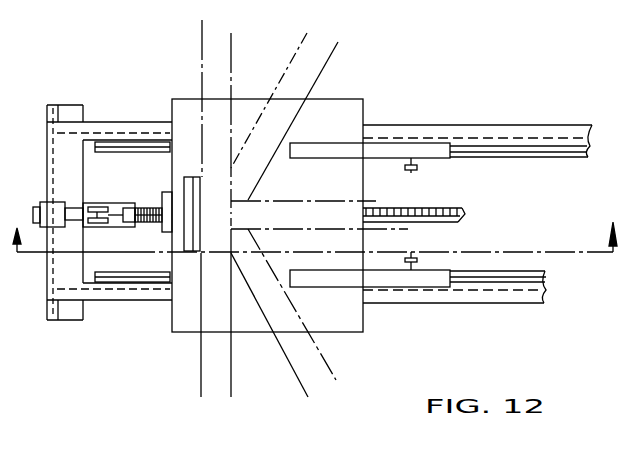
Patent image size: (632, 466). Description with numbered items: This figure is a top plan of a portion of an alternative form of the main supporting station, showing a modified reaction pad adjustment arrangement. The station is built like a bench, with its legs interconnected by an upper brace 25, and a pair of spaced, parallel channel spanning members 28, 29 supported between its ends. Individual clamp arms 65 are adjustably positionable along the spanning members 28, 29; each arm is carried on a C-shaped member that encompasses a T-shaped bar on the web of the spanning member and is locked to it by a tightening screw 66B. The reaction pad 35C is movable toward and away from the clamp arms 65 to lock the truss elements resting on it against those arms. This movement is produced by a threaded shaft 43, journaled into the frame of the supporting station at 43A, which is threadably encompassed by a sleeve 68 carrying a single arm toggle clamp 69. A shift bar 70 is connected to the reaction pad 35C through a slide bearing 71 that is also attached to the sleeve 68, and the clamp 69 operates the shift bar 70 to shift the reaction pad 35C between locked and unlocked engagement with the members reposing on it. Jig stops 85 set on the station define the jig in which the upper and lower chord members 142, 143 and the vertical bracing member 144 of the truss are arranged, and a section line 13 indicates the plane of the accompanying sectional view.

The section line 13- 13 is at (317, 224).
The upper brace 25 is at (68, 310).
The spanning member 28 is at (478, 297).
The spanning member 29 is at (530, 133).
The reaction pad 35C is at (347, 112).
The threaded shaft 43 is at (440, 208).
The shaft journal 43A is at (42, 203).
The clamp arm 65 is at (387, 152).
The tightening screw 66B is at (405, 172).
The sleeve 68 is at (116, 204).
The single arm toggle clamp 69 is at (88, 203).
The shift bar 70 is at (150, 222).
The slide bearing 71 is at (129, 209).
The jig stop 85 is at (185, 177).
The upper chord member 142 is at (298, 86).
The lower chord member 143 is at (222, 86).
The vertical bracing member 144 is at (283, 221).